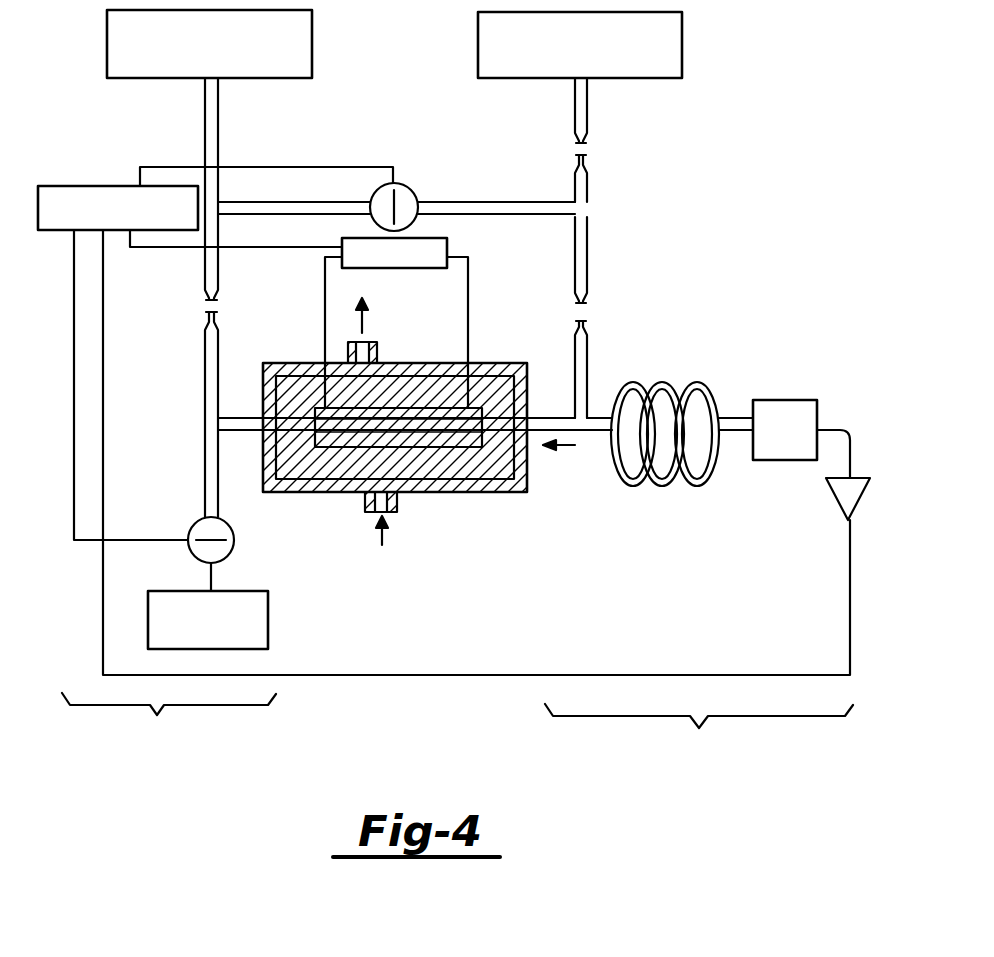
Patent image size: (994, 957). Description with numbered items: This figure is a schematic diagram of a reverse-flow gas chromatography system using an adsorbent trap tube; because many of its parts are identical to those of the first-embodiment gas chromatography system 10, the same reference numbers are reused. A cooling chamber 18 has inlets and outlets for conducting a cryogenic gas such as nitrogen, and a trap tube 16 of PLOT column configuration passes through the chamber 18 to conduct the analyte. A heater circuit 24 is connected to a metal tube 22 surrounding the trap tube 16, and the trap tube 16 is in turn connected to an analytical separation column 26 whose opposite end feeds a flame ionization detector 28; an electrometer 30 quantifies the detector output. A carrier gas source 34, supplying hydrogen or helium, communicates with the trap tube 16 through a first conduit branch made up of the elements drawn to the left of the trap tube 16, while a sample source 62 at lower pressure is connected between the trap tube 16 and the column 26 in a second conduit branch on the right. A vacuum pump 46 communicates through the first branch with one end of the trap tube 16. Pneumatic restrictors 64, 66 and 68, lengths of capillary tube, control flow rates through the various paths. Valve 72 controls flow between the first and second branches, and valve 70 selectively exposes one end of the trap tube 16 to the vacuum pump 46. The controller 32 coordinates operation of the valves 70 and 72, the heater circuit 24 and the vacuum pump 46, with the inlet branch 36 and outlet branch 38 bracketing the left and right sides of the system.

The gas chromatography system 10 is at (692, 228).
The trap tube 16 is at (370, 427).
The cooling chamber 18 is at (292, 362).
The metal tube 22 is at (440, 440).
The heater circuit 24 is at (447, 243).
The analytical separation column 26 is at (672, 383).
The flame ionization detector 28 is at (770, 400).
The electrometer 30 is at (830, 495).
The controller 32 is at (60, 186).
The carrier gas source 34 is at (312, 48).
The inlet branch 36 is at (169, 722).
The outlet branch 38 is at (699, 733).
The vacuum pump 46 is at (268, 618).
The sample source 62 is at (478, 45).
The pneumatic restrictor 64 is at (222, 298).
The pneumatic restrictor 66 is at (590, 322).
The pneumatic restrictor 68 is at (590, 142).
The valve 70 is at (234, 548).
The valve 72 is at (405, 184).